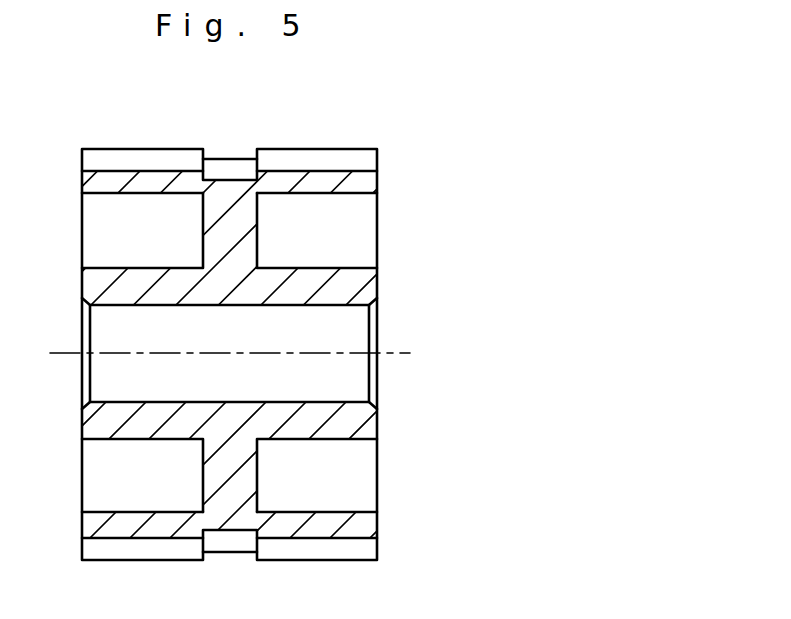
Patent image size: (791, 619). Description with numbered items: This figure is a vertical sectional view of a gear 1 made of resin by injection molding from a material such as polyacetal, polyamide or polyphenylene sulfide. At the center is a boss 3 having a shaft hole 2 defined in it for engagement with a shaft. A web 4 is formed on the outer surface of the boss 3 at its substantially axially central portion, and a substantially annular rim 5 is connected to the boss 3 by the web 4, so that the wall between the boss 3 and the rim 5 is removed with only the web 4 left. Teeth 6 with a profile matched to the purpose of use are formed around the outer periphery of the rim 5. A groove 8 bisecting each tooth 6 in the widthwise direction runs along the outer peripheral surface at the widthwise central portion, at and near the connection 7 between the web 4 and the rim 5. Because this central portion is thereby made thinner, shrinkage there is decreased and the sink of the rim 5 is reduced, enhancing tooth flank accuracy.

The gear 1 is at (460, 119).
The shaft hole 2 is at (337, 385).
The boss 3 is at (345, 288).
The web 4 is at (258, 238).
The rim 5 is at (318, 185).
The teeth 6 is at (103, 158).
The connection 7 is at (203, 213).
The groove 8 is at (227, 158).